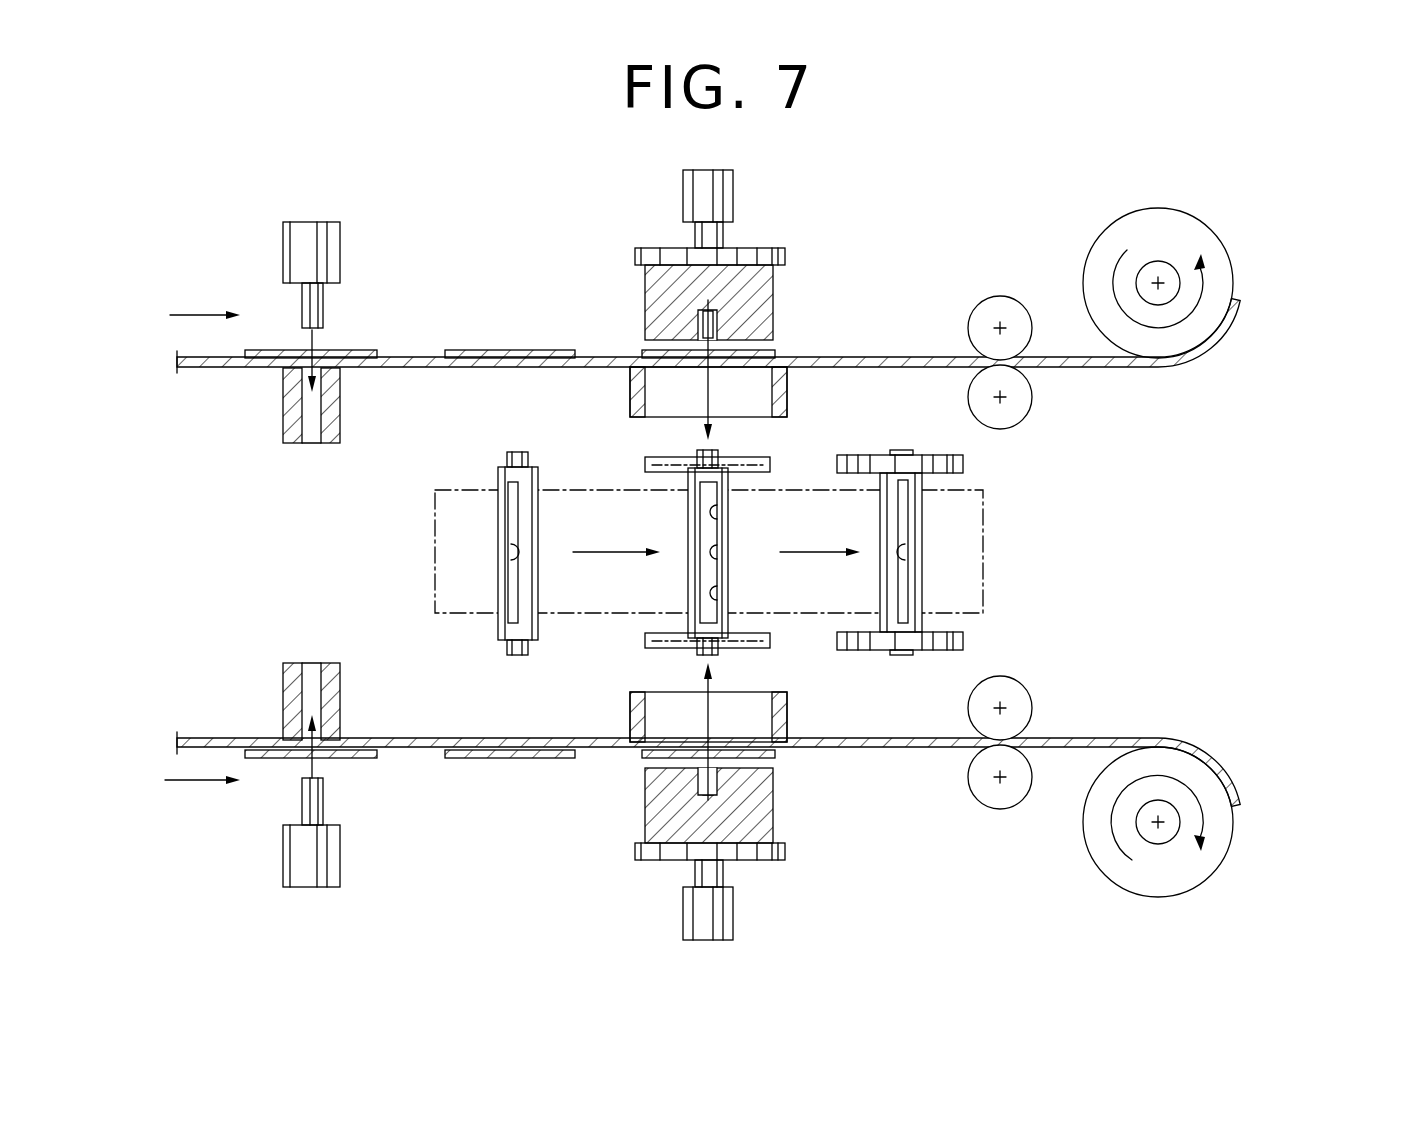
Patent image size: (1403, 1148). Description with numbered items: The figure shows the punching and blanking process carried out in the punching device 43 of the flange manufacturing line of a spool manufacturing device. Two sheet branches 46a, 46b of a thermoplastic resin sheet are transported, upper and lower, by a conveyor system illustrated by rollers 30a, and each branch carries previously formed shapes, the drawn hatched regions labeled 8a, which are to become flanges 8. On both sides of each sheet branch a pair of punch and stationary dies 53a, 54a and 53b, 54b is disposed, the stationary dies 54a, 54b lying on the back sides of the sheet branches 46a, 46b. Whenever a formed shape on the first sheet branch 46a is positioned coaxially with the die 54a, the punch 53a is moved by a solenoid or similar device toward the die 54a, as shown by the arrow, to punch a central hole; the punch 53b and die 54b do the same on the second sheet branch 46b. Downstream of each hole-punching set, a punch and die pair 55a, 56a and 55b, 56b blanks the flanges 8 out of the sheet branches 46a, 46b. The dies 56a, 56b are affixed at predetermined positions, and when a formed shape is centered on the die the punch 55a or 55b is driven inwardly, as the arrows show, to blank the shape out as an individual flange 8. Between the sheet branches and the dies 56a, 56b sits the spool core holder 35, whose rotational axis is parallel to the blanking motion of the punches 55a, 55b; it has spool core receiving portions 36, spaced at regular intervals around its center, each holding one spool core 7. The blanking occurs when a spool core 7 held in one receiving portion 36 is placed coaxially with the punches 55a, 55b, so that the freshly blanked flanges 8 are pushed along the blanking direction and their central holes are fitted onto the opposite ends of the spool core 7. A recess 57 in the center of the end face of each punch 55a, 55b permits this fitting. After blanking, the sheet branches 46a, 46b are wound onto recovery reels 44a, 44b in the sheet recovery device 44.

The punching device 43 is at (466, 236).
The first sheet branch 46a is at (412, 353).
The second sheet branch 46b is at (402, 752).
The cassette half 8a is at (527, 350).
The punch 53a is at (287, 245).
The stationary die 54a is at (283, 398).
The punch 53b is at (283, 857).
The stationary die 54b is at (283, 697).
The punch 55a is at (773, 305).
The punch 55b is at (773, 810).
The die 56a is at (787, 397).
The die 56b is at (787, 710).
The recess 57 is at (698, 340).
The rollers 30a is at (1000, 296).
The sheet recovery device 44 is at (1093, 200).
The recovery reel 44a is at (1175, 265).
The recovery reel 44b is at (1165, 835).
The spool core holder 35 is at (983, 565).
The spool core 7 is at (498, 482).
The spool core receiving portion 36 is at (688, 530).
The flange 8 is at (963, 463).